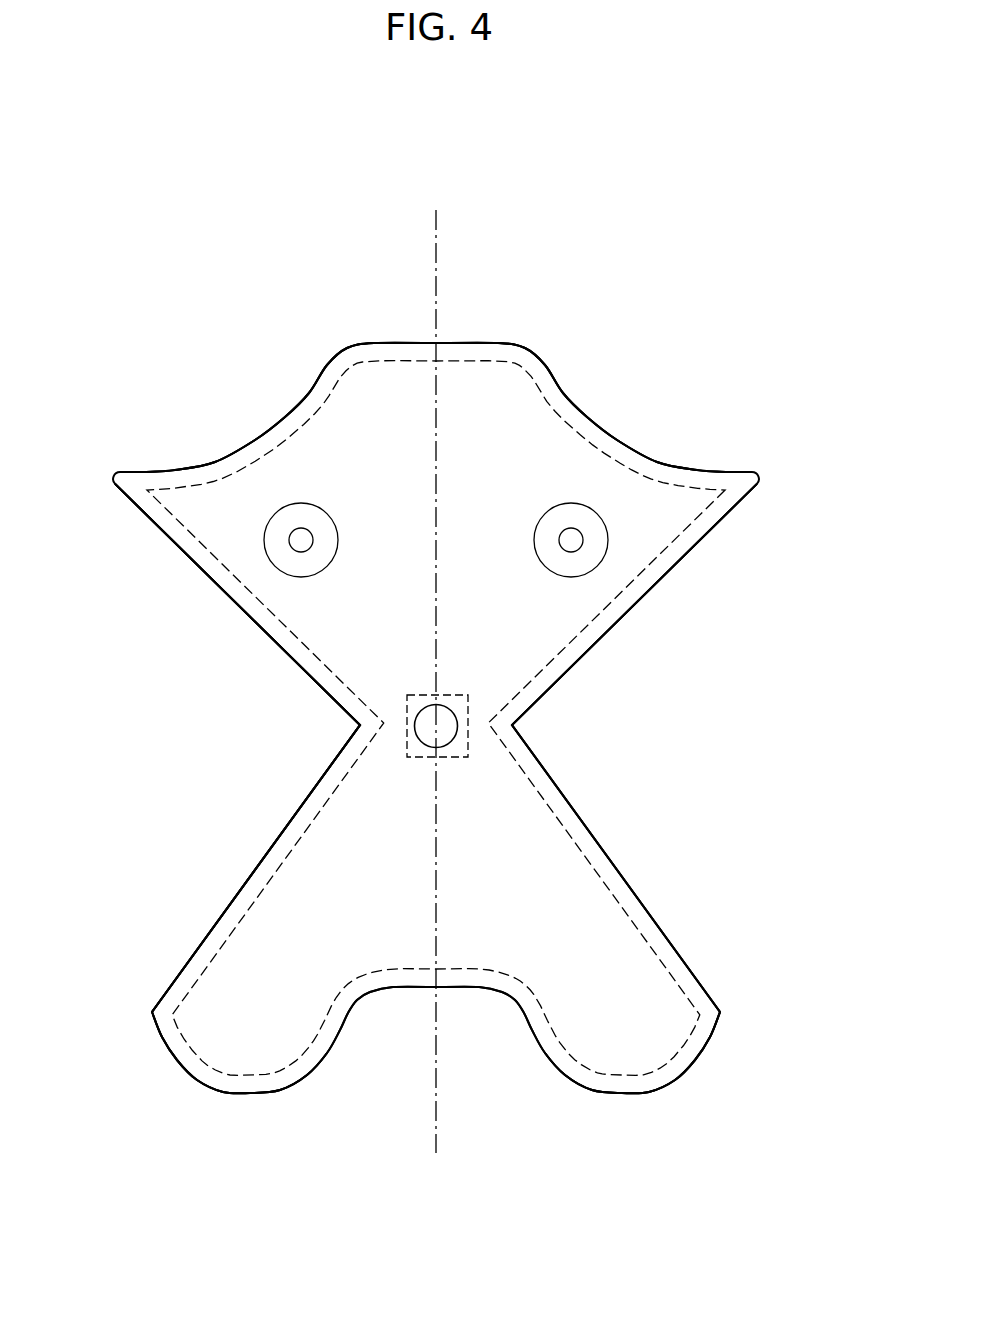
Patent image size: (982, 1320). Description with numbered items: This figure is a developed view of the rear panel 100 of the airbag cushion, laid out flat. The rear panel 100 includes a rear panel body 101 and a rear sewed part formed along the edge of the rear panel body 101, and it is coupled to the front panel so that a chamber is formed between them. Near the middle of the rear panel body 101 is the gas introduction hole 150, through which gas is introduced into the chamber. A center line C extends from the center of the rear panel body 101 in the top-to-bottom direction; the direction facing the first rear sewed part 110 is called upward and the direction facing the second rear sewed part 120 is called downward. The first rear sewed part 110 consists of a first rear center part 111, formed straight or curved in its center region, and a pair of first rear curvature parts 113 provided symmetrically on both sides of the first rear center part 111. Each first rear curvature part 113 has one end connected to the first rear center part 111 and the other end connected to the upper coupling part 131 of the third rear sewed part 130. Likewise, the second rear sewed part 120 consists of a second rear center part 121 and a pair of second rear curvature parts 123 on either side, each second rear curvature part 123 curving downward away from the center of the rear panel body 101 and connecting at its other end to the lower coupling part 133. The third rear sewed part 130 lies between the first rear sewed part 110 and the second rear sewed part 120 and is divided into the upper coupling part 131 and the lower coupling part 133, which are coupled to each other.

The rear panel 100 is at (158, 226).
The rear panel body 101 is at (378, 613).
The first rear sewed part 110 is at (681, 318).
The first rear center part 111 is at (477, 342).
The first rear curvature part 113 is at (625, 445).
The second rear sewed part 120 is at (680, 1186).
The second rear center part 121 is at (455, 988).
The second rear curvature part 123 is at (228, 1094).
The third rear sewed part 130 is at (190, 707).
The upper coupling part 131 is at (305, 673).
The lower coupling part 133 is at (278, 830).
The gas introduction hole 150 is at (447, 757).
The center line C is at (436, 1136).